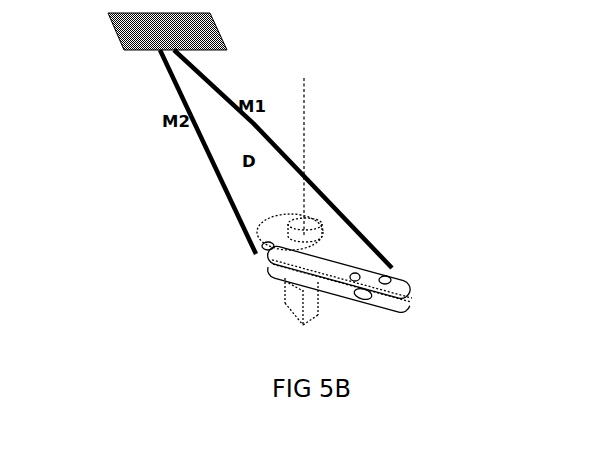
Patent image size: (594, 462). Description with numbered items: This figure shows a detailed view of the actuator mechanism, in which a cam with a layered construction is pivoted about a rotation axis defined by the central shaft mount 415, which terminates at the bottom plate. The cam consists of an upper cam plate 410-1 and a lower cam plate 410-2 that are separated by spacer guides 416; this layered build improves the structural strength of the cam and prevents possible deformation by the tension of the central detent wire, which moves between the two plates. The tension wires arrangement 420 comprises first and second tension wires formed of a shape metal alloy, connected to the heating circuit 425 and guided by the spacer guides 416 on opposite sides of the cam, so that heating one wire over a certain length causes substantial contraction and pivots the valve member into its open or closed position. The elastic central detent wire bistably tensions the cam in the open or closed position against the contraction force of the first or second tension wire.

The heating circuit 425 is at (125, 28).
The tension wires arrangement 420 is at (200, 187).
The upper cam plate 410-1 is at (400, 278).
The lower cam plate 410-2 is at (413, 312).
The spacer guides 416 is at (262, 249).
The shaft mount 415 is at (296, 307).